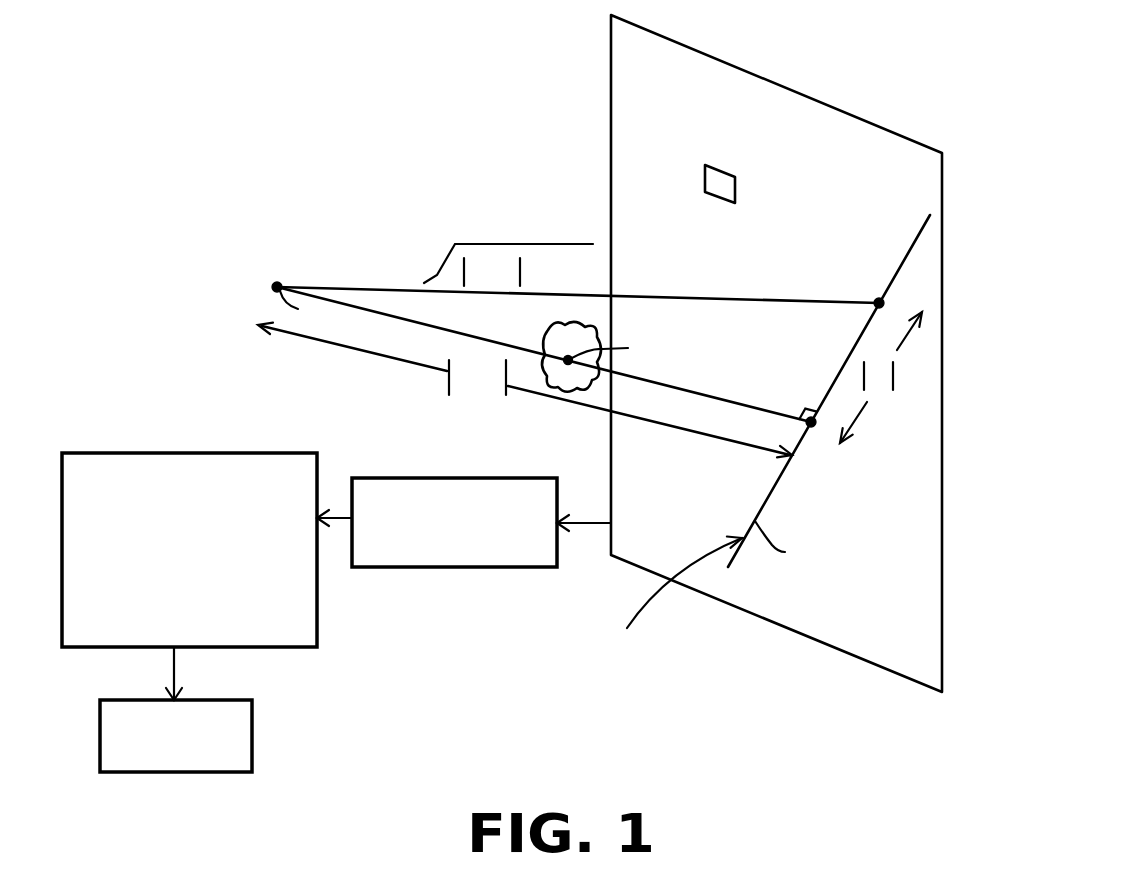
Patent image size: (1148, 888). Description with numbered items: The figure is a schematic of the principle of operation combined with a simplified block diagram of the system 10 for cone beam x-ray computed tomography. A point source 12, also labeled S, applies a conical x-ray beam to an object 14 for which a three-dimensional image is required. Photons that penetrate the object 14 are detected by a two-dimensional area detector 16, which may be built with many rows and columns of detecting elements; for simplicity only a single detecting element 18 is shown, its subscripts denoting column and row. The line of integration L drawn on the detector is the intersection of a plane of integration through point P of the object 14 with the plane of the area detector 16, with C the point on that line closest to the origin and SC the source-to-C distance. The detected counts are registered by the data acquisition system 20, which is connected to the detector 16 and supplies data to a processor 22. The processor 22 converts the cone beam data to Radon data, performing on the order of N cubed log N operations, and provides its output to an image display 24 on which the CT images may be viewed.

The system 10 is at (502, 417).
The point source 12 is at (270, 288).
The object 14 is at (548, 327).
The area detector 16 is at (800, 92).
The detecting element 18 is at (700, 177).
The data acquisition system 20 is at (396, 478).
The processor 22 is at (140, 453).
The image display 24 is at (165, 772).